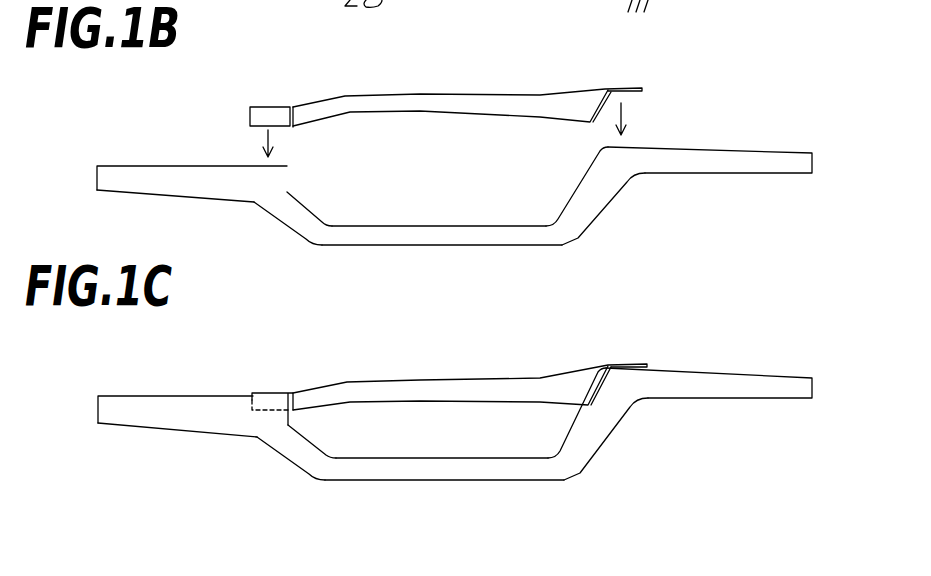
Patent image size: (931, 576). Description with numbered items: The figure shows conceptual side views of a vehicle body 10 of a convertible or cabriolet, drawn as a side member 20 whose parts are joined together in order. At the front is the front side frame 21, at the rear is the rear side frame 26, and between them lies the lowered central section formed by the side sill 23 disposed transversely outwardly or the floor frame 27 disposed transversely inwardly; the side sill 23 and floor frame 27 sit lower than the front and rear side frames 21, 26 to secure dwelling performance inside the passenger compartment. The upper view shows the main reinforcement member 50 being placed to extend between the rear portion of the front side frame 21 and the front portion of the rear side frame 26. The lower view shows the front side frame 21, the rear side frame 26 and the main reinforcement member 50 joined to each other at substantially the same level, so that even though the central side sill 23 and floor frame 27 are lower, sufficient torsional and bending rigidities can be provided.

In FIG. 1B, the vehicle body 10 is at (468, 188).
In FIG. 1C, the vehicle body 10 is at (465, 423).
In FIG. 1B, the side member 20 is at (157, 150).
In FIG. 1C, the side member 20 is at (160, 382).
In FIG. 1B, the front side frame 21 is at (207, 185).
In FIG. 1C, the front side frame 21 is at (197, 418).
In FIG. 1B, the side sill 23 is at (442, 268).
In FIG. 1C, the side sill 23 is at (444, 507).
In FIG. 1B, the floor frame 27 is at (472, 238).
In FIG. 1C, the floor frame 27 is at (473, 472).
In FIG. 1B, the rear side frame 26 is at (742, 163).
In FIG. 1C, the rear side frame 26 is at (727, 388).
In FIG. 1B, the main reinforcement member 50 is at (435, 102).
In FIG. 1C, the main reinforcement member 50 is at (425, 385).